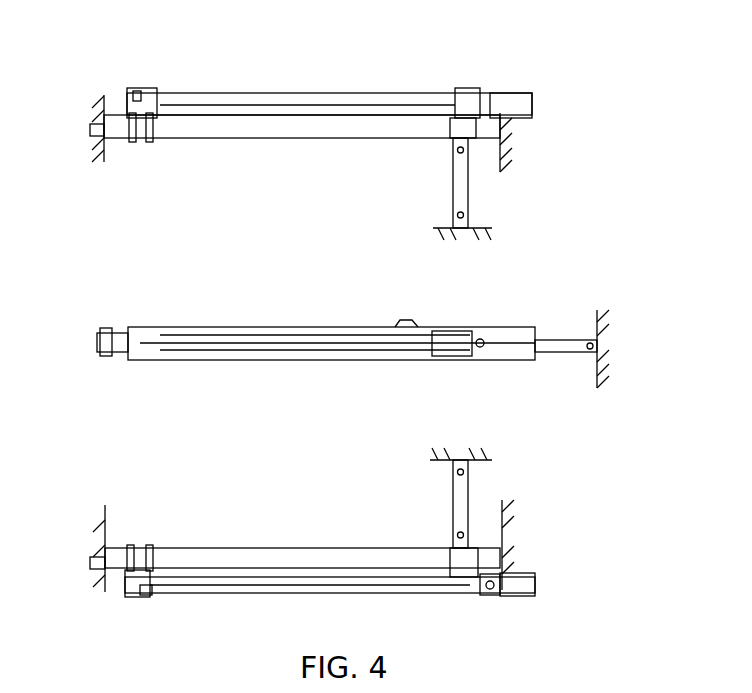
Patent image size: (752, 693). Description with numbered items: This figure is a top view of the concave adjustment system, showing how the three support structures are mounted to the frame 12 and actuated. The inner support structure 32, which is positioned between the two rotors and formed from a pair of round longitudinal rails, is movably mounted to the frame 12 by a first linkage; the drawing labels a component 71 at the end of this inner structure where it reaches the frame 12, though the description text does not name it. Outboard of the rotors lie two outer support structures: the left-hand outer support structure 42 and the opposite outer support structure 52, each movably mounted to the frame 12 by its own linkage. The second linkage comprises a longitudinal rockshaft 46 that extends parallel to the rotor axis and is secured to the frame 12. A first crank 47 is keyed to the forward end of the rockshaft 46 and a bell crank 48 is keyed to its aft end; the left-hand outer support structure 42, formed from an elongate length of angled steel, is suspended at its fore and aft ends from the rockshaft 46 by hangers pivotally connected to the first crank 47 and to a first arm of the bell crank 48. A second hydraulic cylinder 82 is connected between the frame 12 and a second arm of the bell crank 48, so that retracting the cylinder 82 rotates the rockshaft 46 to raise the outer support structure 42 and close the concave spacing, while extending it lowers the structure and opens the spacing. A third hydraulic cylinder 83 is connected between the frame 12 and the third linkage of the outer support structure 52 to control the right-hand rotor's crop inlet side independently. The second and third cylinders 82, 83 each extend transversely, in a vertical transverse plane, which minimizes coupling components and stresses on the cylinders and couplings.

The frame 12 is at (100, 130).
The inner support structure 32 is at (507, 330).
The left-hand outer support structure 42 is at (255, 594).
The rockshaft 46 is at (322, 548).
The first crank 47 is at (127, 598).
The bell crank 48 is at (490, 592).
The outer support structure 52 is at (405, 92).
The extension rod 71 is at (565, 340).
The second hydraulic cylinder 82 is at (453, 500).
The third hydraulic cylinder 83 is at (453, 187).